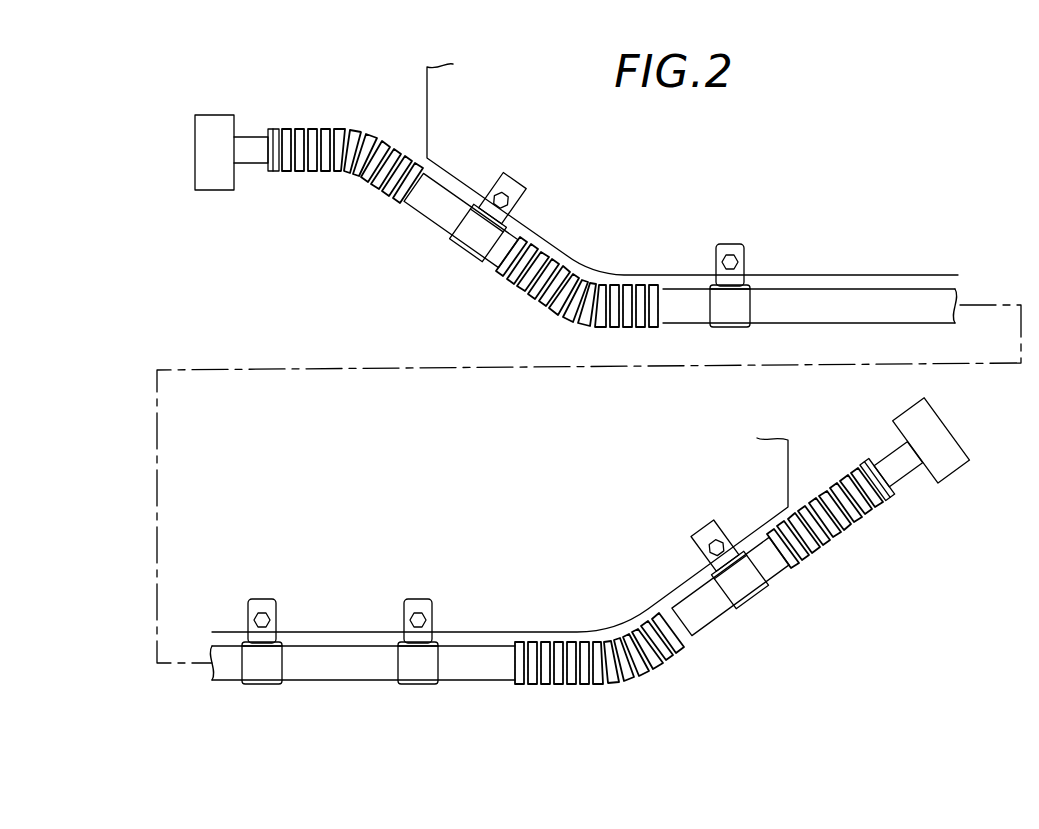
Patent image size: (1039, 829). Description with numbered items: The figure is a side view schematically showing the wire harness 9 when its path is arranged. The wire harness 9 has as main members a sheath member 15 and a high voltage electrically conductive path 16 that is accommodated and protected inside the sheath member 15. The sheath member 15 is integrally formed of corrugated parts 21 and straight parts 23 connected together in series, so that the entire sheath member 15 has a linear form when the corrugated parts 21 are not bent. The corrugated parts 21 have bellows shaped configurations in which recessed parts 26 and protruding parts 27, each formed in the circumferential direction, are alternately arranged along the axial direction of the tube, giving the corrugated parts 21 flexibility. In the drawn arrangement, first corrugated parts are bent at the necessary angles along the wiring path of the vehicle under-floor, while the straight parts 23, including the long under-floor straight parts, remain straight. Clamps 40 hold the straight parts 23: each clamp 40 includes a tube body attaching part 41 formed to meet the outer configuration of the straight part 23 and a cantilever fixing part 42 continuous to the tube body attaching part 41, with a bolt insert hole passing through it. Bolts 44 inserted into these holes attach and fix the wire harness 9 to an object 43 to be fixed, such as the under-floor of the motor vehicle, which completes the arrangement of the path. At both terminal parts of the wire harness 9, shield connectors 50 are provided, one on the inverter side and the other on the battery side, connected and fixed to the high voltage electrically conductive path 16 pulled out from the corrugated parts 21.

The wire harness 9 is at (397, 287).
The sheath member 15 is at (939, 280).
The high voltage electrically conductive path 16 is at (255, 137).
The corrugated parts 21 is at (678, 725).
The straight parts 23 is at (424, 219).
The recessed parts 26 is at (268, 170).
The protruding parts 27 is at (276, 170).
The clamps 40 is at (466, 258).
The tube body attaching parts 41 is at (749, 289).
The fixing parts 42 is at (744, 301).
The object to be fixed 43 is at (437, 142).
The bolts 44 is at (502, 176).
The shield connectors 50 is at (199, 163).